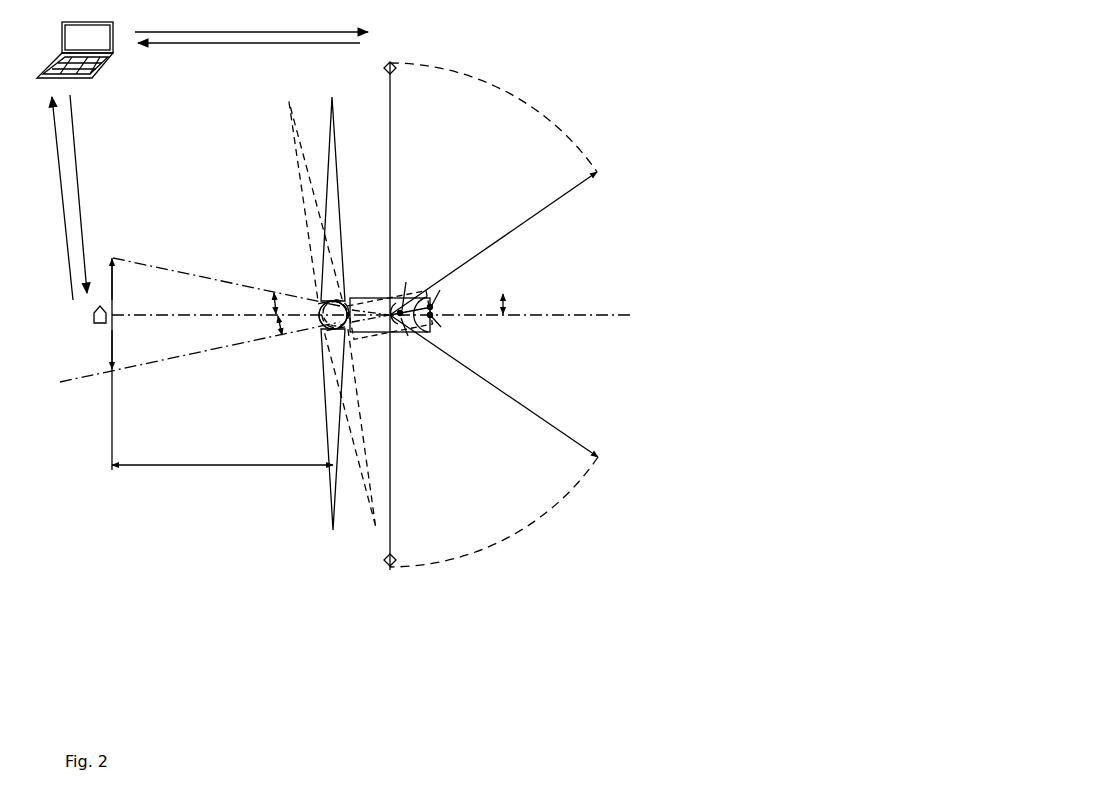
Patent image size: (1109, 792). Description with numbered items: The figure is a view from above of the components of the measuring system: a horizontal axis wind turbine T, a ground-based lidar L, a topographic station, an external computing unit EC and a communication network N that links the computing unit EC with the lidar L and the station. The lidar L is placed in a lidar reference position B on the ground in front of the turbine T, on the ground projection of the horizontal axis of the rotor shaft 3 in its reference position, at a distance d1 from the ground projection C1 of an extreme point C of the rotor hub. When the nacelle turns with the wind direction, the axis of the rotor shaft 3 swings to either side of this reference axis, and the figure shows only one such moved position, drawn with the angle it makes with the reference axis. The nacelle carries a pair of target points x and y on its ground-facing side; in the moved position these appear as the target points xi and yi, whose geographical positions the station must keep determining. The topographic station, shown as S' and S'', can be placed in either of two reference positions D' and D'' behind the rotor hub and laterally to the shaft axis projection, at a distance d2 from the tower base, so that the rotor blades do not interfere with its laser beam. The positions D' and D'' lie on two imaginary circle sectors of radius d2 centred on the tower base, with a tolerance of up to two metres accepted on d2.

The external computing unit EC is at (89, 62).
The communication network N is at (210, 166).
The ground-based lidar L is at (85, 318).
The horizontal axis wind turbine T is at (308, 288).
The lidar reference position B is at (346, 364).
The extreme point of the rotor hub C is at (324, 325).
The projection on the ground of the extreme point of the rotor hub C1 is at (322, 337).
The rotor shaft 3 is at (395, 311).
The distance between the lidar reference position and the hub projection d1 is at (222, 457).
The distance between the topographic station positions and the tower base d2 is at (494, 315).
The target point X x is at (441, 329).
The target point Y y is at (407, 335).
The x coordinate at position i xi is at (440, 290).
The y coordinate at position i yi is at (407, 288).
The upper sensor S' is at (401, 53).
The first topographic station reference position D' is at (397, 74).
The lower sensor S'' is at (389, 582).
The second topographic station reference position D'' is at (399, 554).